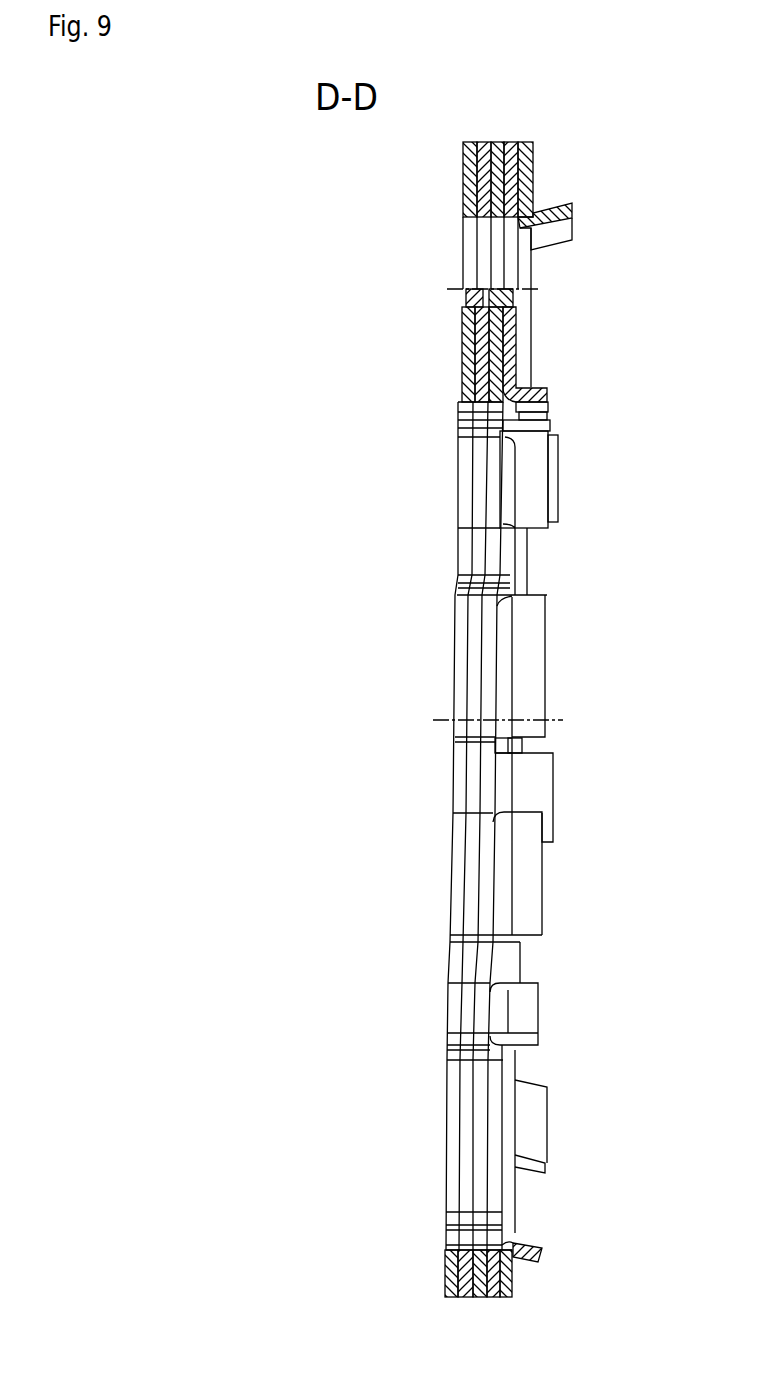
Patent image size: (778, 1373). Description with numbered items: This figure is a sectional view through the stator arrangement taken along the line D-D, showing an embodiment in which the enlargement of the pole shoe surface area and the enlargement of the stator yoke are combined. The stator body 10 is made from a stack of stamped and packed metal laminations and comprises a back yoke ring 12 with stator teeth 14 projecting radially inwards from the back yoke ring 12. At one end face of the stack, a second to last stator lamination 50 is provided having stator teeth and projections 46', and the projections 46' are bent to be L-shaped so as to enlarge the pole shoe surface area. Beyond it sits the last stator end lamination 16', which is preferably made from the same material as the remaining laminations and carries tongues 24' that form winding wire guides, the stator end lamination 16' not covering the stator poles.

The stator body 10 is at (578, 284).
The back yoke ring 12 is at (441, 1273).
The stator teeth 14 is at (460, 358).
The stator end lamination 16' is at (522, 132).
The tongues 24' is at (597, 759).
The projections 46' is at (580, 693).
The second to last stator lamination 50 is at (509, 152).